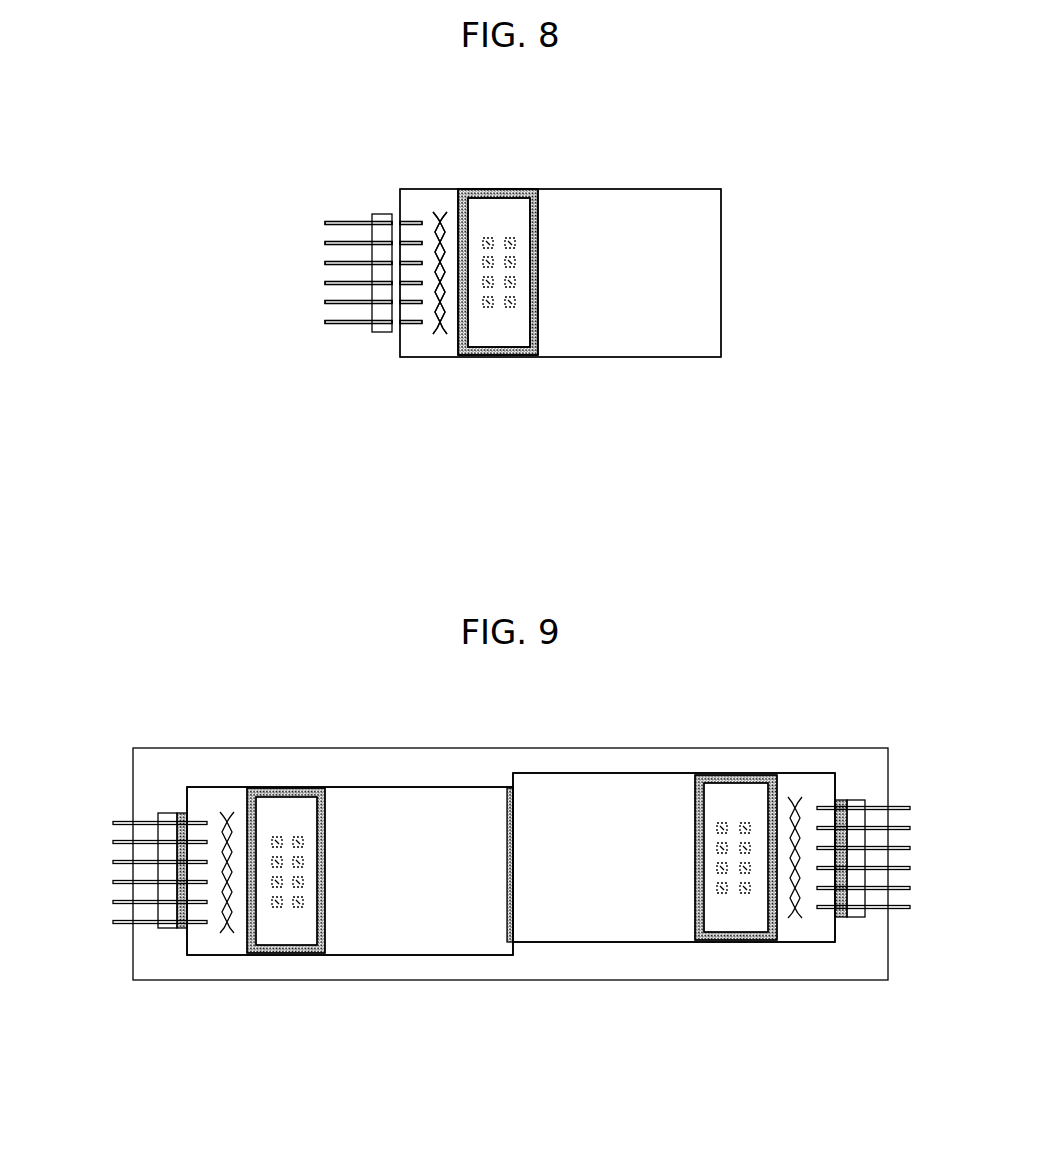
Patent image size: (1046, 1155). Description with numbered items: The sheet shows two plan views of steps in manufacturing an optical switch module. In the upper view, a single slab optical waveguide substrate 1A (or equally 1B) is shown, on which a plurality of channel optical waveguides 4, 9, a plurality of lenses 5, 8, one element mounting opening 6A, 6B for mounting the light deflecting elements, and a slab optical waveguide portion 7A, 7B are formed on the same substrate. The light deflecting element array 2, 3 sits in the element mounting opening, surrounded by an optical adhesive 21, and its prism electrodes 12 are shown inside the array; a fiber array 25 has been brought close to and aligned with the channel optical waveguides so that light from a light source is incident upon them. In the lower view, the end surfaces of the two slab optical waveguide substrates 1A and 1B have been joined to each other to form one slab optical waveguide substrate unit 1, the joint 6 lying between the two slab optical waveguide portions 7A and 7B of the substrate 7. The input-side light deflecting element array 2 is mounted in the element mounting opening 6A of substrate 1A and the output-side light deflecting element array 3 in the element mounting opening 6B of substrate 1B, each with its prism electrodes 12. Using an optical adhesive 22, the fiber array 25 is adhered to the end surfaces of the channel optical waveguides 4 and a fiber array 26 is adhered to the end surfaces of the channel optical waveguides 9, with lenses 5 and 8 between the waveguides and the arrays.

In FIG. 9, the slab optical waveguide substrate unit 1 is at (422, 1066).
In FIG. 9, the slab optical waveguide substrate 1A is at (407, 962).
In FIG. 9, the slab optical waveguide substrate 1B is at (572, 945).
In FIG. 8, the input-side light deflecting element array 2 is at (510, 338).
In FIG. 9, the input-side light deflecting element array 2 is at (302, 807).
In FIG. 8, the output-side light deflecting element array 3 is at (499, 272).
In FIG. 9, the output-side light deflecting element array 3 is at (739, 923).
In FIG. 8, the channel optical waveguides 4 is at (410, 222).
In FIG. 9, the channel optical waveguides 4 is at (198, 820).
In FIG. 8, the lenses 5 is at (428, 218).
In FIG. 9, the lenses 5 is at (217, 813).
In FIG. 9, the joint portion 6 is at (507, 915).
In FIG. 8, the element mounting opening 6A is at (516, 186).
In FIG. 9, the element mounting opening 6A is at (297, 959).
In FIG. 8, the element mounting opening 6B is at (498, 272).
In FIG. 9, the element mounting opening 6B is at (738, 772).
In FIG. 9, the substrate 7 is at (455, 709).
In FIG. 8, the slab optical waveguide portion 7A is at (647, 205).
In FIG. 9, the slab optical waveguide portion 7A is at (445, 795).
In FIG. 8, the slab optical waveguide portion 7B is at (560, 273).
In FIG. 9, the slab optical waveguide portion 7B is at (560, 783).
In FIG. 8, the lenses 8 is at (440, 273).
In FIG. 9, the lenses 8 is at (798, 803).
In FIG. 8, the channel optical waveguides 9 is at (373, 273).
In FIG. 9, the channel optical waveguides 9 is at (828, 807).
In FIG. 8, the prism electrodes 12 is at (492, 307).
In FIG. 9, the prism electrodes 12 is at (275, 907).
In FIG. 8, the optical adhesive 21 is at (462, 190).
In FIG. 9, the optical adhesive 21 is at (250, 788).
In FIG. 9, the optical adhesive 22 is at (180, 930).
In FIG. 8, the fiber array 25 is at (398, 361).
In FIG. 9, the fiber array 25 is at (167, 813).
In FIG. 9, the fiber array 26 is at (858, 800).